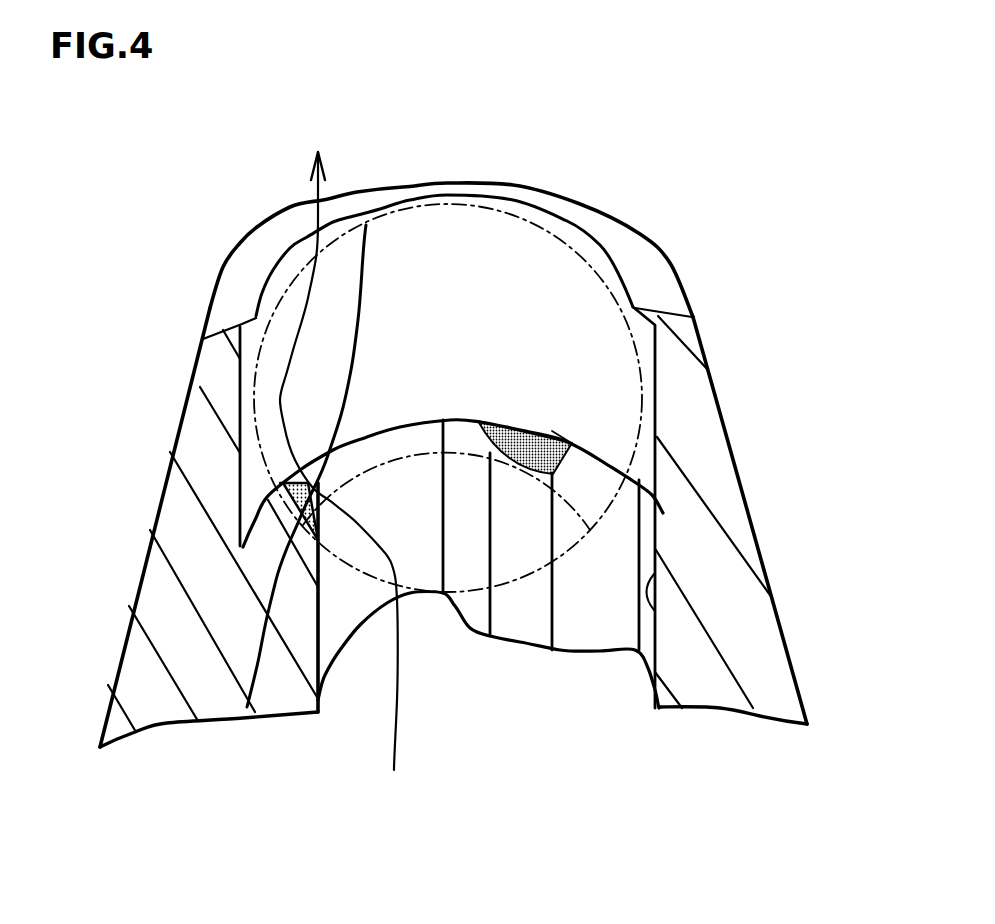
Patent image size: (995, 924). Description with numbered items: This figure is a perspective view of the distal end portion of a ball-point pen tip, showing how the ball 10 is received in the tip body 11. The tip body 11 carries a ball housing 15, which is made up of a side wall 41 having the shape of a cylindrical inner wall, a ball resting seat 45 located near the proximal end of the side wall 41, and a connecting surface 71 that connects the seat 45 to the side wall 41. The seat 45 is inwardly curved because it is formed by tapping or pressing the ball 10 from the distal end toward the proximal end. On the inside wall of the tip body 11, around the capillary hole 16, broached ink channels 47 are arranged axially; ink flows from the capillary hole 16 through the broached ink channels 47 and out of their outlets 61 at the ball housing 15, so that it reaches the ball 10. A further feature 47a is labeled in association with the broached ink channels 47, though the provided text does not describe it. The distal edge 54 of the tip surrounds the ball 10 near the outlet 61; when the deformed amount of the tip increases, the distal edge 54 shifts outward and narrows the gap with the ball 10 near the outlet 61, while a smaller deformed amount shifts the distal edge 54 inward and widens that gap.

The ball 10 is at (455, 245).
The tip body 11 is at (202, 440).
The ball housing 15 is at (575, 287).
The capillary hole 16 is at (537, 673).
The side wall 41 is at (648, 336).
The ball resting seat 45 is at (556, 430).
The broached ink channels 47 is at (345, 624).
The claw portion 47a is at (655, 617).
The distal edge 54 is at (247, 707).
The outlets 61 is at (366, 225).
The connecting surface 71 is at (298, 510).